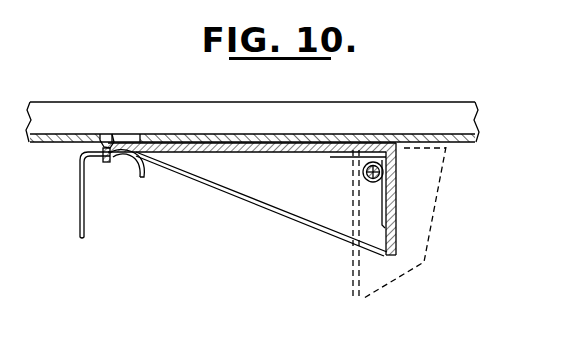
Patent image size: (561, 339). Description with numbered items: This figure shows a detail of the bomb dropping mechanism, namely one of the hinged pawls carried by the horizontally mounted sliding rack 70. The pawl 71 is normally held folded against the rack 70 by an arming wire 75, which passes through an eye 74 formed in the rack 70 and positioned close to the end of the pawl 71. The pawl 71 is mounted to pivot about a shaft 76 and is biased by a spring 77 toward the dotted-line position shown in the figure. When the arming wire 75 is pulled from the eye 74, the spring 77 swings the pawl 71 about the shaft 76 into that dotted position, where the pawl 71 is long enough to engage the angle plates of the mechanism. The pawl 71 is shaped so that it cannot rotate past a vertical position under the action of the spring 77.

The sliding rack 70 is at (477, 119).
The hinged pawl 71 is at (324, 222).
The eye 74 is at (107, 163).
The arming wire 75 is at (85, 229).
The shaft 76 is at (384, 173).
The spring 77 is at (364, 175).